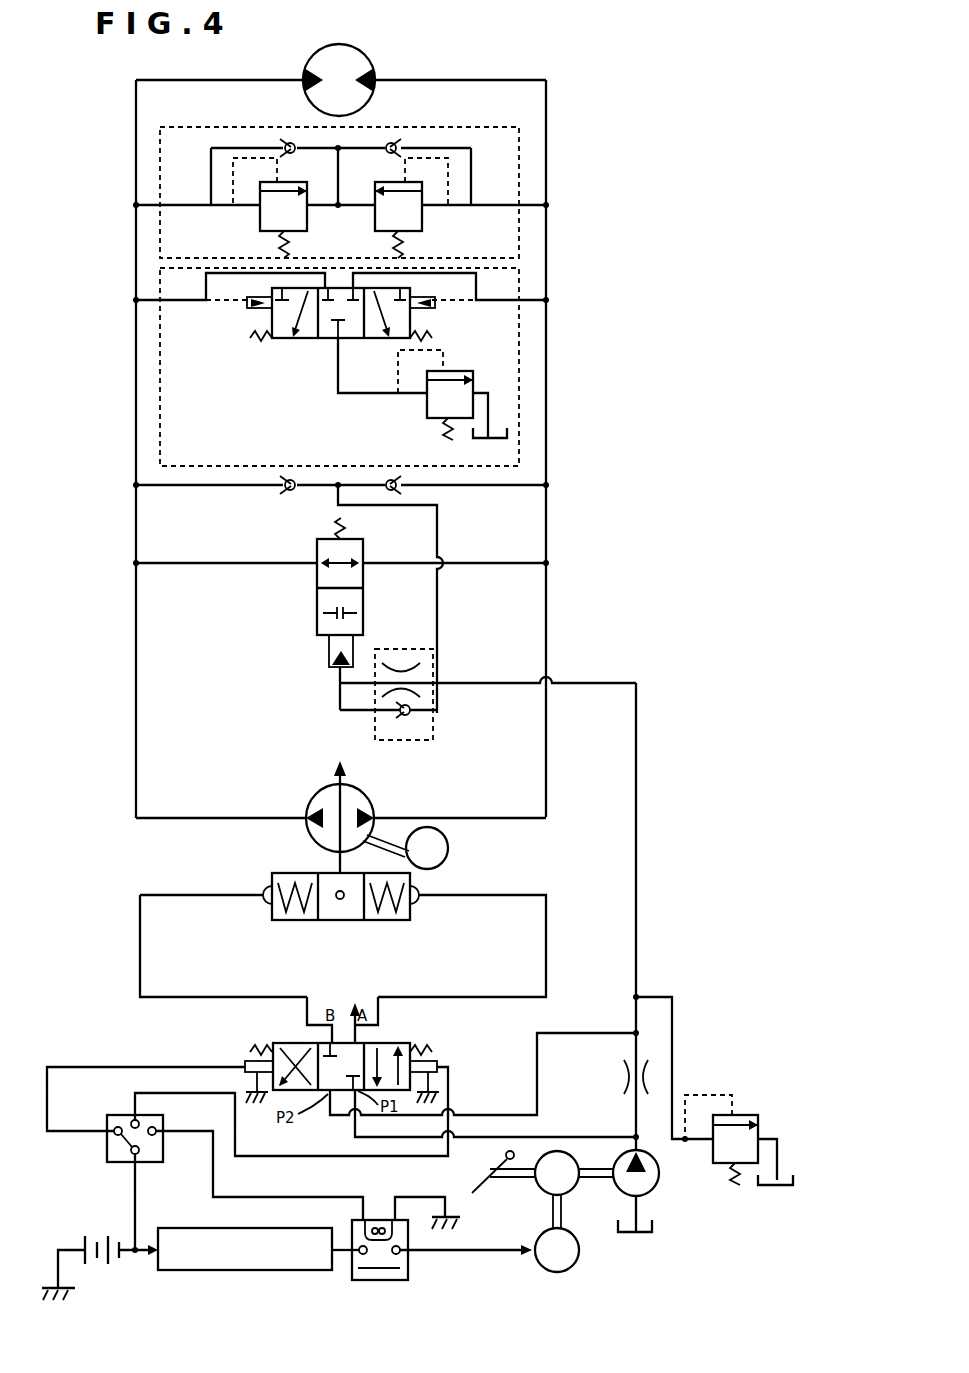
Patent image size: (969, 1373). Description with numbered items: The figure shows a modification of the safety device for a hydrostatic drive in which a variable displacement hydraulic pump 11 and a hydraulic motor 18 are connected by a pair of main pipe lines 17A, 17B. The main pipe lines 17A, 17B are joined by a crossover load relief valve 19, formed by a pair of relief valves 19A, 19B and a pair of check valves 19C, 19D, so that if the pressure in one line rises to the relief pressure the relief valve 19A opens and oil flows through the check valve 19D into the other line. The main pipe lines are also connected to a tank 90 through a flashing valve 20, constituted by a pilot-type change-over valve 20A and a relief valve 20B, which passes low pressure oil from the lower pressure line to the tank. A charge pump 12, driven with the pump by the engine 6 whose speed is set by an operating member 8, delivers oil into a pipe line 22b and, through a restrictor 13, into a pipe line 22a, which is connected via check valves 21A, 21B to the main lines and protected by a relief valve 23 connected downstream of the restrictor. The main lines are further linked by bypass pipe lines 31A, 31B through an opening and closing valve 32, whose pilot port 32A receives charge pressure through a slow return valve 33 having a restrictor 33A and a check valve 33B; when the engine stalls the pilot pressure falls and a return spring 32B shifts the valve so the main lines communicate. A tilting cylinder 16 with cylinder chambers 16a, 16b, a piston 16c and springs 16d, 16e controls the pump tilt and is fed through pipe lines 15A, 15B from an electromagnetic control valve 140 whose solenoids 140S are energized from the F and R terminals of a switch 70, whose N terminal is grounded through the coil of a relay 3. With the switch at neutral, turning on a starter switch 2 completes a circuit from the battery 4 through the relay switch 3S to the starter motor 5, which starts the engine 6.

The hydraulic motor 18 is at (364, 64).
The main pipe line 17A is at (548, 120).
The main pipe line 17B is at (136, 140).
The crossover load relief valve 19 is at (520, 158).
The relief valve 19A is at (424, 229).
The relief valve 19B is at (258, 228).
The check valve 19C is at (399, 141).
The check valve 19D is at (281, 141).
The flashing valve 20 is at (520, 278).
The change-over valve 20A is at (338, 342).
The relief valve 20B is at (427, 414).
The tank 90 is at (495, 412).
The check valve 21A is at (404, 487).
The check valve 21B is at (282, 486).
The bypass pipe line 31A is at (495, 568).
The bypass pipe line 31B is at (175, 568).
The opening and closing valve 32 is at (315, 628).
The pilot port 32A is at (328, 660).
The return spring 32B is at (333, 520).
The slow return valve 33 is at (433, 735).
The restrictor 33A is at (418, 655).
The check valve 33B is at (406, 745).
The pipe line 22a is at (640, 780).
The variable displacement hydraulic pump 11 is at (309, 802).
The engine 6 is at (450, 848).
The tilting cylinder 16 is at (265, 906).
The cylinder chamber 16a is at (391, 920).
The cylinder chamber 16b is at (290, 920).
The piston 16c is at (343, 920).
The spring 16d is at (428, 889).
The spring 16e is at (264, 889).
The pipe line 15A is at (546, 927).
The pipe line 15B is at (140, 940).
The electromagnetic control valve 140 is at (455, 1035).
The solenoid 140S is at (245, 1060).
The switch 70 is at (108, 1115).
The restrictor 13 is at (601, 1077).
The relief valve 23 is at (740, 1113).
The pipe line 22b is at (651, 1145).
The operating member 8 is at (502, 1157).
The charge pump 12 is at (658, 1190).
The battery 4 is at (88, 1232).
The starter switch 2 is at (241, 1270).
The relay 3 is at (405, 1289).
The relay switch 3S is at (358, 1282).
The starter motor 5 is at (580, 1252).